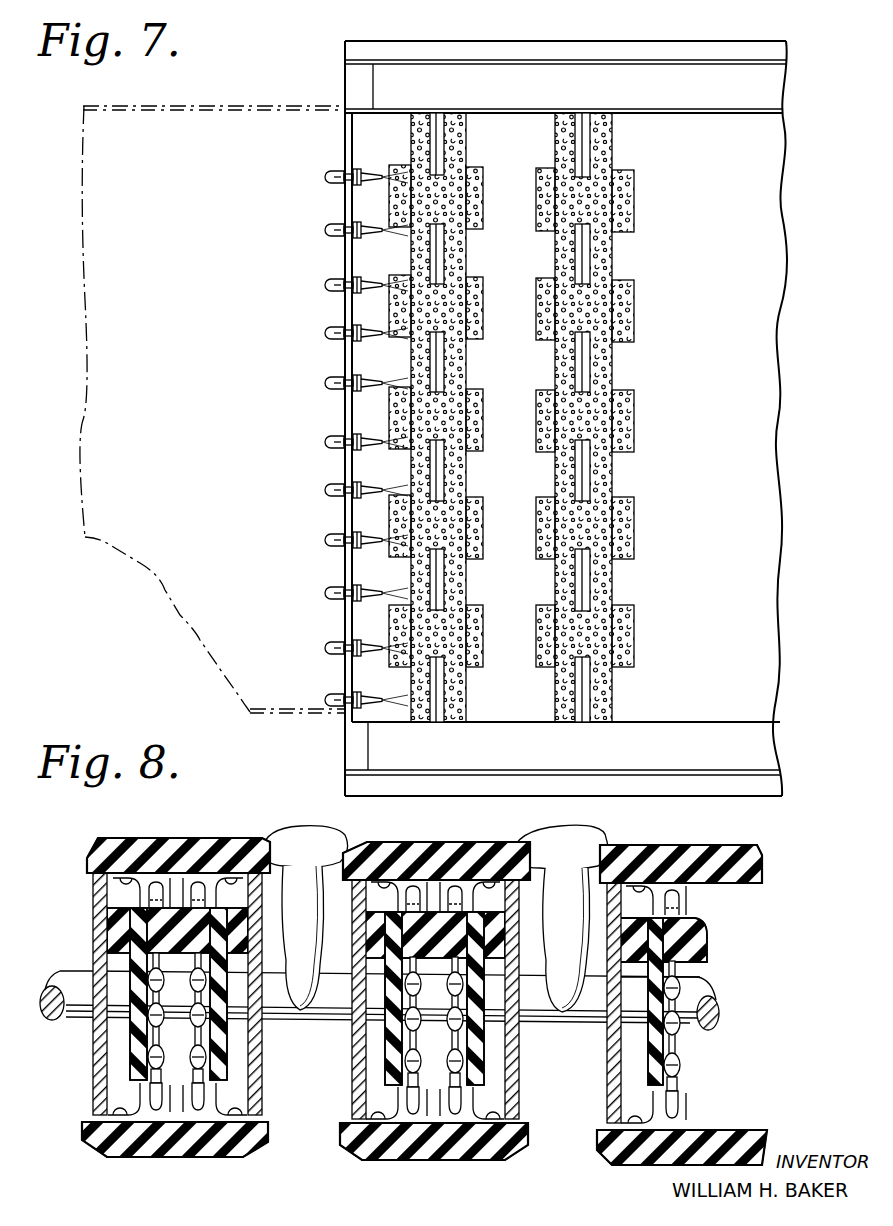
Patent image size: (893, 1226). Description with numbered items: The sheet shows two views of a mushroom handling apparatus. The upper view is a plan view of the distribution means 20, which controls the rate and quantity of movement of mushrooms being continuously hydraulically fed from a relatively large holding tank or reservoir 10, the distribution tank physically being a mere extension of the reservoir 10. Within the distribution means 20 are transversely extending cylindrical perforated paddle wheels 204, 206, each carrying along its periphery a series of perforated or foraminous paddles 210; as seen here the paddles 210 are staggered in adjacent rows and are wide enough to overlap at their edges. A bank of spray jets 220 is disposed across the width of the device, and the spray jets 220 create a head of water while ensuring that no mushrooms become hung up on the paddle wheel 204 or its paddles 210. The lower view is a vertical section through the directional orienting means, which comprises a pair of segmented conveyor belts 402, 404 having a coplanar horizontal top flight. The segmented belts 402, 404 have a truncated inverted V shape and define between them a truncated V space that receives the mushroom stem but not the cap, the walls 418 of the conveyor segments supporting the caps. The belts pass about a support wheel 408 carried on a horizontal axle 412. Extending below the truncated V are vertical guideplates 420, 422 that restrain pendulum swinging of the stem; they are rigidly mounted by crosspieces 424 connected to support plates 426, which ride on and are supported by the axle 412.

In FIG. 7, the reservoir 10 is at (122, 617).
In FIG. 7, the distribution means 20 is at (792, 706).
In FIG. 7, the paddle wheel 204 is at (480, 155).
In FIG. 7, the paddle wheel 206 is at (628, 163).
In FIG. 7, the paddles 210 is at (585, 576).
In FIG. 7, the spray jets 220 is at (358, 386).
In FIG. 8, the segmented conveyor belt 402 is at (140, 1150).
In FIG. 8, the segmented conveyor belt 404 is at (428, 852).
In FIG. 8, the support wheel 408 is at (160, 885).
In FIG. 8, the axle 412 is at (712, 1000).
In FIG. 8, the walls 418 is at (100, 851).
In FIG. 8, the vertical guideplate 420 is at (262, 1060).
In FIG. 8, the vertical guideplate 422 is at (350, 1068).
In FIG. 8, the crosspieces 424 is at (116, 931).
In FIG. 8, the support plates 426 is at (128, 1062).